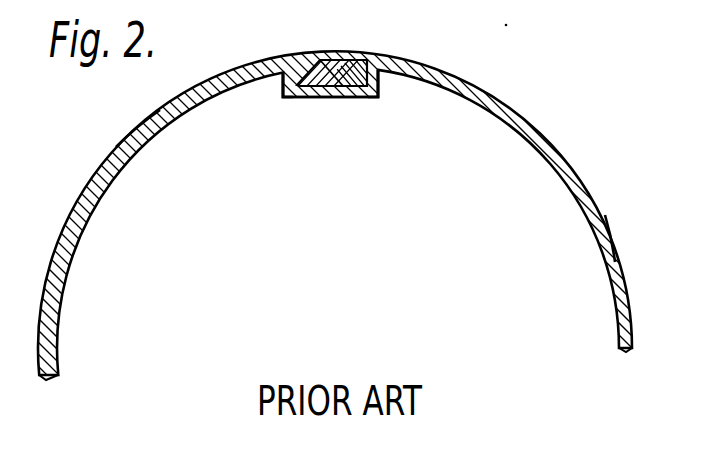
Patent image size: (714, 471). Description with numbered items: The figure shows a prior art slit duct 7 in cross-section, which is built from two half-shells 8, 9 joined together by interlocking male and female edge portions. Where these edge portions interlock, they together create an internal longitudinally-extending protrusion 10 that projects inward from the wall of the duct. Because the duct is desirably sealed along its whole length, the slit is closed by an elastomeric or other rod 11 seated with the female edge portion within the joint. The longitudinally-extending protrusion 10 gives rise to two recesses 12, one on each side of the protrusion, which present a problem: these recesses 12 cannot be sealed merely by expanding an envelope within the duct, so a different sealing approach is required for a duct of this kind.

The slit duct 7 is at (92, 167).
The half-shell 8 is at (145, 147).
The half-shell 9 is at (595, 238).
The longitudinally-extending protrusion 10 is at (356, 97).
The rod 11 is at (364, 64).
The recesses 12 is at (281, 79).